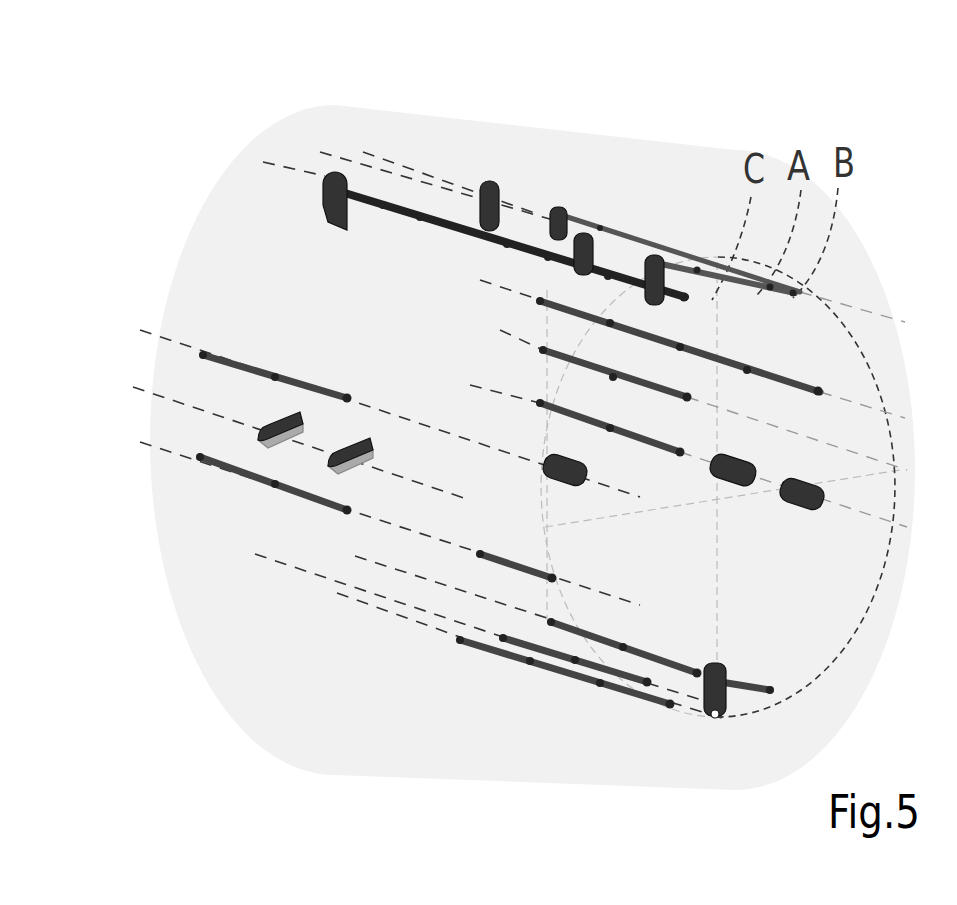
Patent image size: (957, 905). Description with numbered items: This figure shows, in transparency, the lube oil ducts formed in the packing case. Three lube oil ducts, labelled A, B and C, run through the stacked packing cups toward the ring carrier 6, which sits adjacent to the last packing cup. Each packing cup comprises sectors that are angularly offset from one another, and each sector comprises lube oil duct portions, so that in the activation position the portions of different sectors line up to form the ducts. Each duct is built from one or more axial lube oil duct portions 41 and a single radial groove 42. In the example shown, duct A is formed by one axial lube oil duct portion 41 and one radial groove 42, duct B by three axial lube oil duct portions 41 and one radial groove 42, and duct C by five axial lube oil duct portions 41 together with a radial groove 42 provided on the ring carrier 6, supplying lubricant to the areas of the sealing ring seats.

The ring carrier 6 is at (273, 210).
The axial lube oil duct portions 41 is at (680, 296).
The radial groove 42 is at (338, 212).